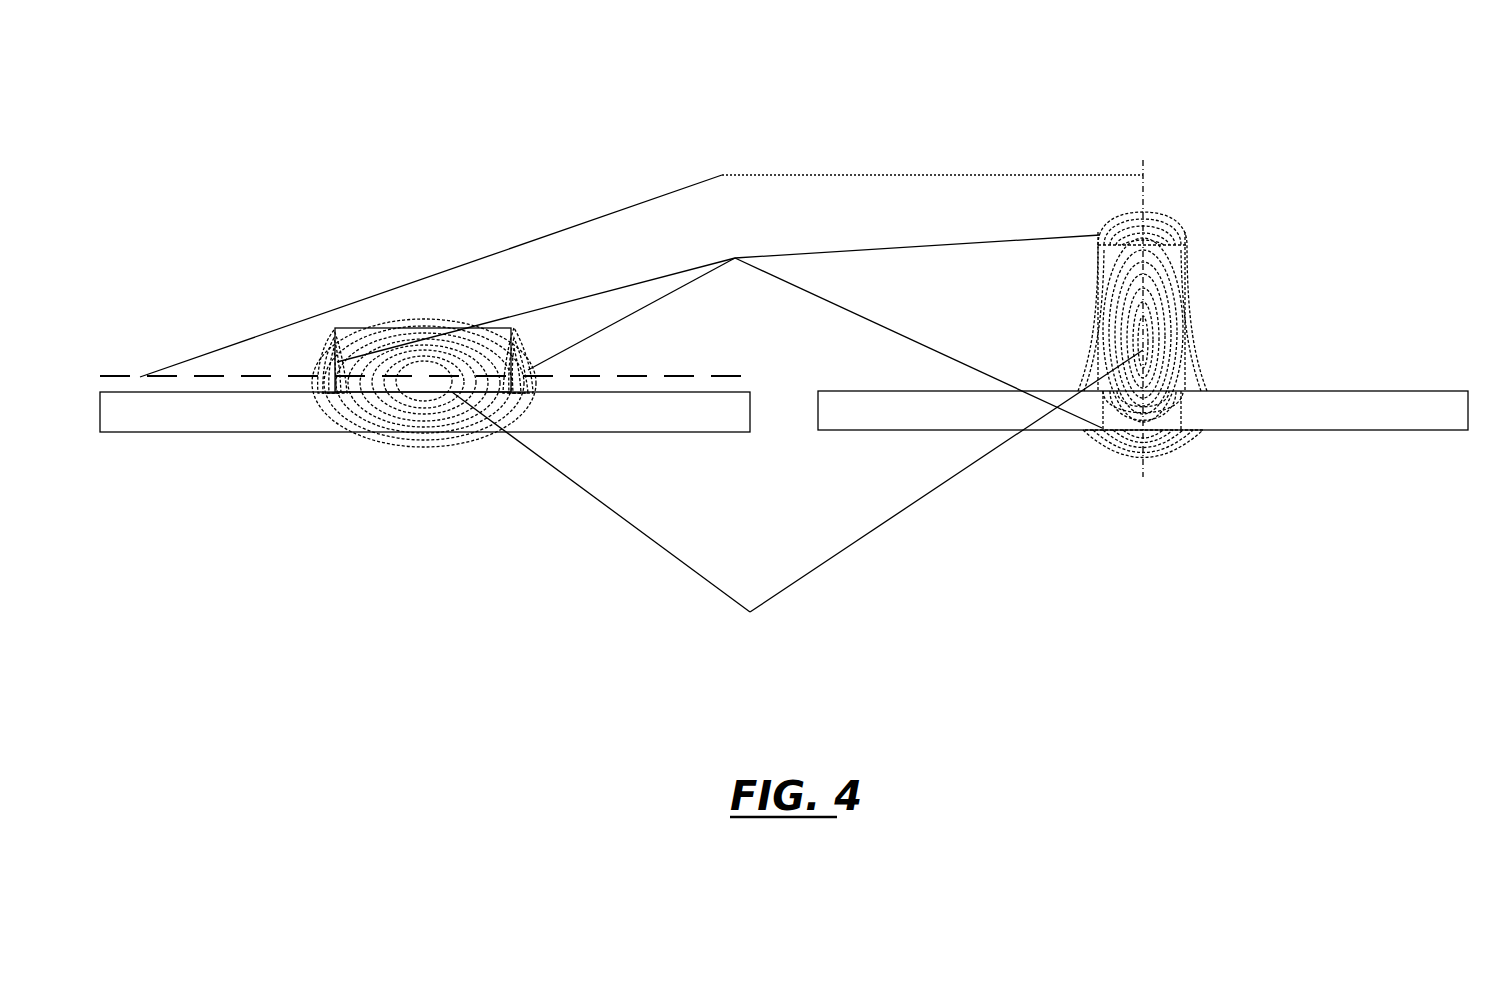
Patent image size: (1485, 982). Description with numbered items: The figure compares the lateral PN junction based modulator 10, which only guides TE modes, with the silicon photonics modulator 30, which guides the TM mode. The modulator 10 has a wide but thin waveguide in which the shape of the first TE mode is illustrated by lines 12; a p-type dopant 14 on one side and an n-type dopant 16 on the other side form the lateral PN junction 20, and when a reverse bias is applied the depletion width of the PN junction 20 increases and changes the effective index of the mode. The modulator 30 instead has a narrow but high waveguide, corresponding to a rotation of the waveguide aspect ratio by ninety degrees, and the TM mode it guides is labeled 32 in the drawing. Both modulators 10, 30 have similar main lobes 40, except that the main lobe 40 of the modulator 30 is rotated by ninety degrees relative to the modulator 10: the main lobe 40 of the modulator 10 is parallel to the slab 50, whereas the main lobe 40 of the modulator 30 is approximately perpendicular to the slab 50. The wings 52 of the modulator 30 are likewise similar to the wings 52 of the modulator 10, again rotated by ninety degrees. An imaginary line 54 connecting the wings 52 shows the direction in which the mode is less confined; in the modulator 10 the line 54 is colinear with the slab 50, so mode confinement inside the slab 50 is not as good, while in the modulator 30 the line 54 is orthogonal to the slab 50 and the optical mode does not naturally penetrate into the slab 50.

The lateral PN junction based modulator 10 is at (783, 286).
The lines 12 is at (451, 327).
The p-type dopant 14 is at (152, 365).
The n-type dopant 16 is at (787, 371).
The lateral PN junction 20 is at (534, 330).
The silicon photonics modulator 30 is at (1187, 266).
The monopole antenna 32 is at (1223, 232).
The main lobe 40 is at (797, 509).
The slab 50 is at (1402, 391).
The wings 52 is at (719, 315).
The imaginary line 54 is at (641, 234).